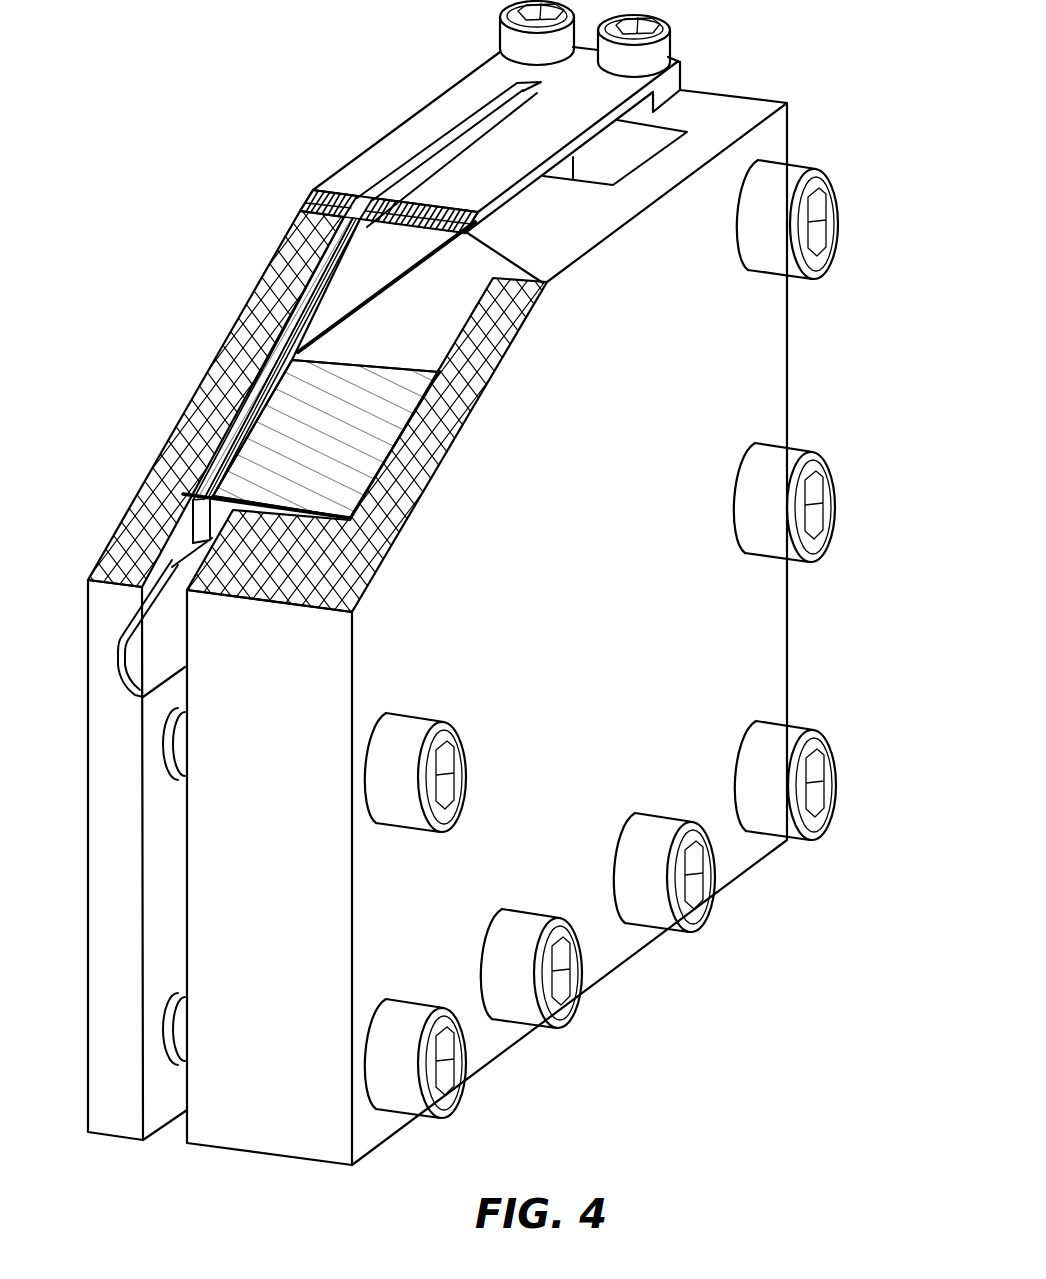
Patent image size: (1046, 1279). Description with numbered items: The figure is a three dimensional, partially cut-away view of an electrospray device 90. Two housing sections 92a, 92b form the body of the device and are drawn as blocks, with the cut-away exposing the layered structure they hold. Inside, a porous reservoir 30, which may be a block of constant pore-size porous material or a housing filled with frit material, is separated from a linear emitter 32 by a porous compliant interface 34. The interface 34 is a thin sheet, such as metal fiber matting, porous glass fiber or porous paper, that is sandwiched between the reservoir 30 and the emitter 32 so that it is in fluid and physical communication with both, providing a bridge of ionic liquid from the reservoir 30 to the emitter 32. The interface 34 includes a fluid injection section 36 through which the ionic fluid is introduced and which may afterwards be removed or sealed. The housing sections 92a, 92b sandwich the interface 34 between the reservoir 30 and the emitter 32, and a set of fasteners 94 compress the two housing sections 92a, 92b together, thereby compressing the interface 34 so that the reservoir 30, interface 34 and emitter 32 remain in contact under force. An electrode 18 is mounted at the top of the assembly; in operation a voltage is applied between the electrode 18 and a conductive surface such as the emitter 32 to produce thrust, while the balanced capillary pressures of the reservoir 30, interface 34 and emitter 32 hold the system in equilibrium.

The electrospray device 90 is at (836, 29).
The housing section 92a is at (292, 860).
The housing section 92b is at (138, 875).
The electrode 18 is at (425, 130).
The porous reservoir 30 is at (393, 443).
The linear emitter 32 is at (343, 240).
The porous compliant interface 34 is at (253, 413).
The fluid injection section 36 is at (480, 115).
The fasteners 94 is at (525, 922).